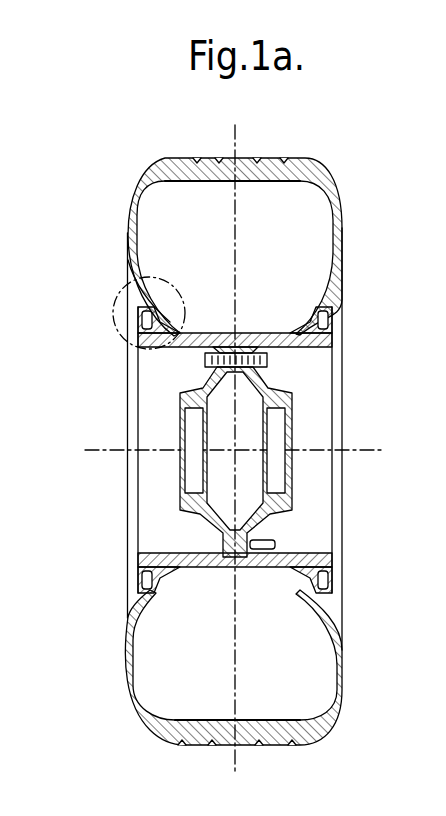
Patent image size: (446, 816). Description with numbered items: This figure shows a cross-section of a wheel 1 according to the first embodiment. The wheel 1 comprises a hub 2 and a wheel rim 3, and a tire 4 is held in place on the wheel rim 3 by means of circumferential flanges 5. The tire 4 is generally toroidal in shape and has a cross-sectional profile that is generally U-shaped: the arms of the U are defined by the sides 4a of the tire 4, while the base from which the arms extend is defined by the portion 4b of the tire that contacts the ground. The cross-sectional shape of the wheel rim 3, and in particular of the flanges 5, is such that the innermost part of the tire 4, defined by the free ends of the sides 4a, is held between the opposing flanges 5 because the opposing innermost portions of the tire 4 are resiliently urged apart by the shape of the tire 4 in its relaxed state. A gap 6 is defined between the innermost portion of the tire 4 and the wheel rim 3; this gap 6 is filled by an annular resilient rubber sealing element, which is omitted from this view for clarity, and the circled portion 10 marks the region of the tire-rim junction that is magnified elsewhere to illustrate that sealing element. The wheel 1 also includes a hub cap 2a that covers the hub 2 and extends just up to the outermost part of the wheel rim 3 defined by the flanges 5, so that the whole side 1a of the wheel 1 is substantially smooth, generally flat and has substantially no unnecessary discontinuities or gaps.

The wheel 1 is at (364, 403).
The side of the wheel 1a is at (125, 507).
The hub 2 is at (262, 517).
The hub cap 2a is at (137, 397).
The wheel rim 3 is at (322, 348).
The tire 4 is at (220, 225).
The sides of the tire 4a is at (133, 253).
The ground-contacting portion of the tire 4b is at (168, 172).
The circumferential flanges 5 is at (322, 326).
The gap 6 is at (128, 620).
The portion 10 is at (115, 328).